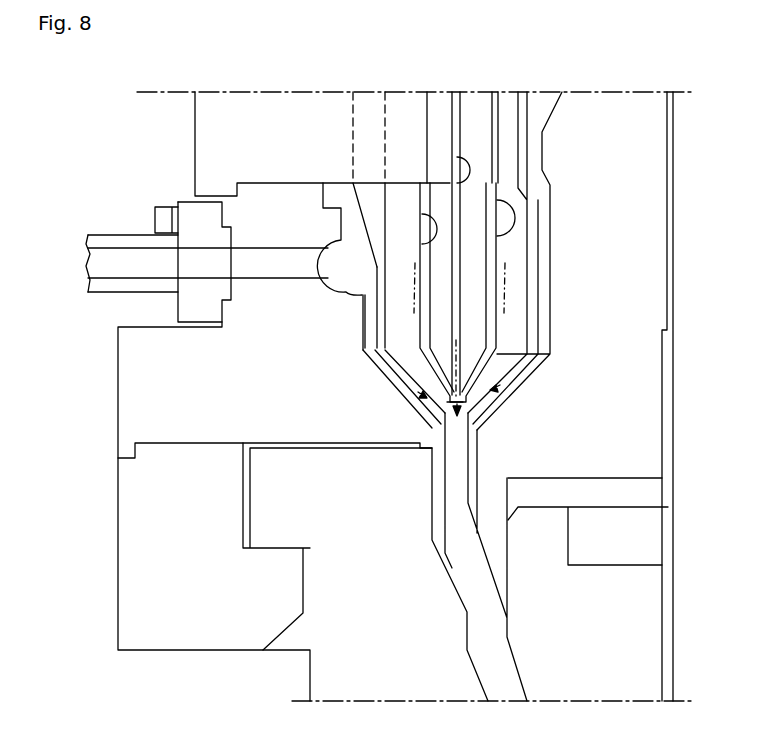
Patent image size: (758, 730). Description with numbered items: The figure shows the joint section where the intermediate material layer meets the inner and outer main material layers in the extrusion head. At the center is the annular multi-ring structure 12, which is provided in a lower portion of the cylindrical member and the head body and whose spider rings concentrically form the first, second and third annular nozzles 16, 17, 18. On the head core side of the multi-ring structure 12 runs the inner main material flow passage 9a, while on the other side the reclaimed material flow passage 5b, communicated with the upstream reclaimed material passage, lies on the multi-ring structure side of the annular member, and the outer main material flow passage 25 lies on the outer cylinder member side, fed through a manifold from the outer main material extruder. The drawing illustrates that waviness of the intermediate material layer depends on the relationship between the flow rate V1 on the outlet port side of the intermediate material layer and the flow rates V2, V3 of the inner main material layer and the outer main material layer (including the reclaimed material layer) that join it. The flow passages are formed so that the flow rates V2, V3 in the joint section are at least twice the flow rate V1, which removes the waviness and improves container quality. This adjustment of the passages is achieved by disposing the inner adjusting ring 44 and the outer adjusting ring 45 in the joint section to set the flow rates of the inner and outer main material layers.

The annular multi-ring structure 12 is at (533, 249).
The inner main material flow passage 9a is at (541, 275).
The second annular nozzle 17 is at (462, 352).
The first annular nozzle 16 is at (552, 355).
The flow rate of the inner main material layer V2 is at (500, 386).
The flow rate on outlet port side of the intermediate material layer V1 is at (460, 413).
The inner adjusting ring 44 is at (478, 455).
The outer adjusting ring 45 is at (440, 489).
The reclaimed material flow passage 5b is at (380, 318).
The outer main material flow passage 25 is at (362, 318).
The third annular nozzle 18 is at (384, 371).
The flow rate of the outer main material layer V3 is at (427, 397).